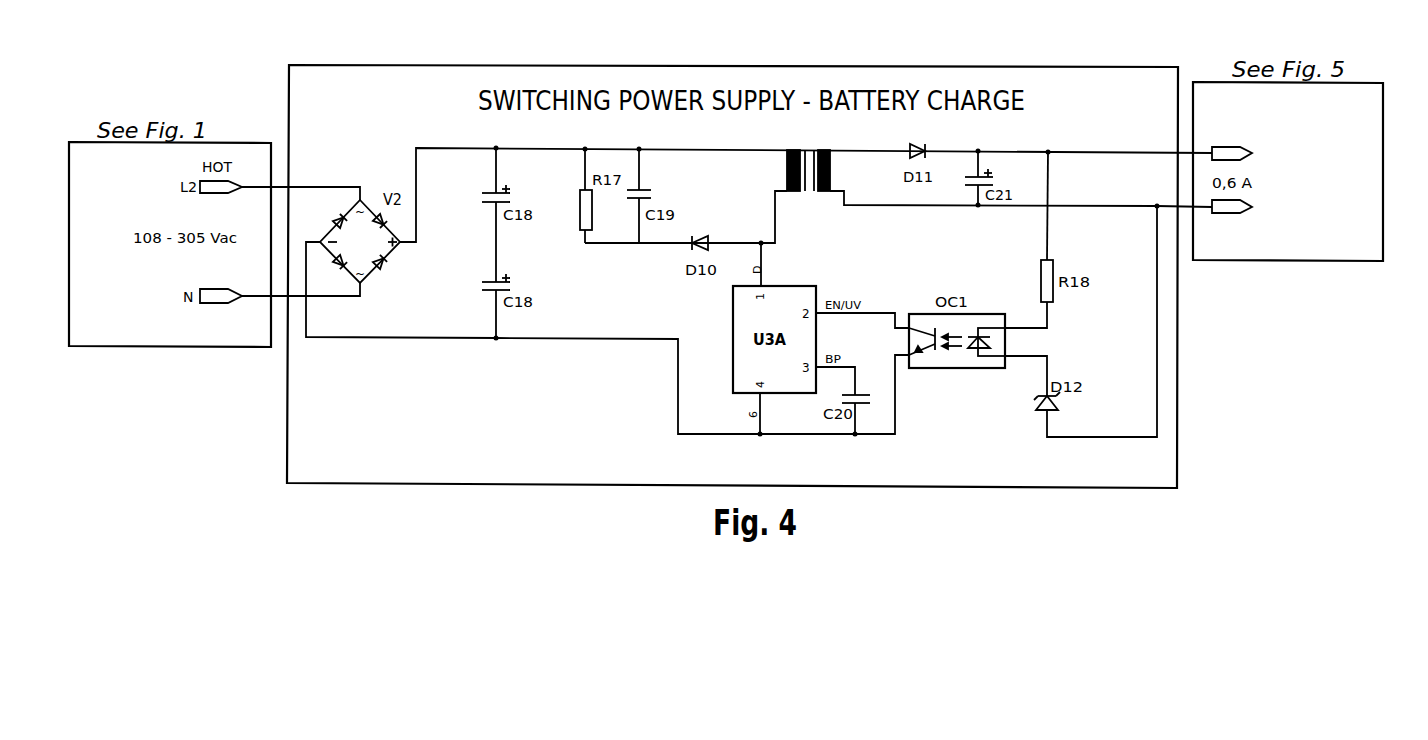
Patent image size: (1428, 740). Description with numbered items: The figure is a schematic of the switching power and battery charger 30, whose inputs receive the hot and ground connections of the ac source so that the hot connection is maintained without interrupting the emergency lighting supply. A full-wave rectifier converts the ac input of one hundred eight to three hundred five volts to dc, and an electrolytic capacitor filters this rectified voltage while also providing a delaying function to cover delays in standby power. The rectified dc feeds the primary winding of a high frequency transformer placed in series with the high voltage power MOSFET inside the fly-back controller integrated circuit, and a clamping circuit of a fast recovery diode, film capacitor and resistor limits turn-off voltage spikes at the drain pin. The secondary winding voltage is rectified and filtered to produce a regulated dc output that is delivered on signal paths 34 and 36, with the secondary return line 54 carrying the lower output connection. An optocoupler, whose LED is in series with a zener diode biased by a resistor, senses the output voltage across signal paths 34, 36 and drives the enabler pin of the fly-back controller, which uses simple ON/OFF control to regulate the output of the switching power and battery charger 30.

The switching power and battery charger 30 is at (780, 156).
The secondary return line 54 is at (1021, 213).
The signal path 34 is at (1271, 138).
The signal path 36 is at (1256, 224).